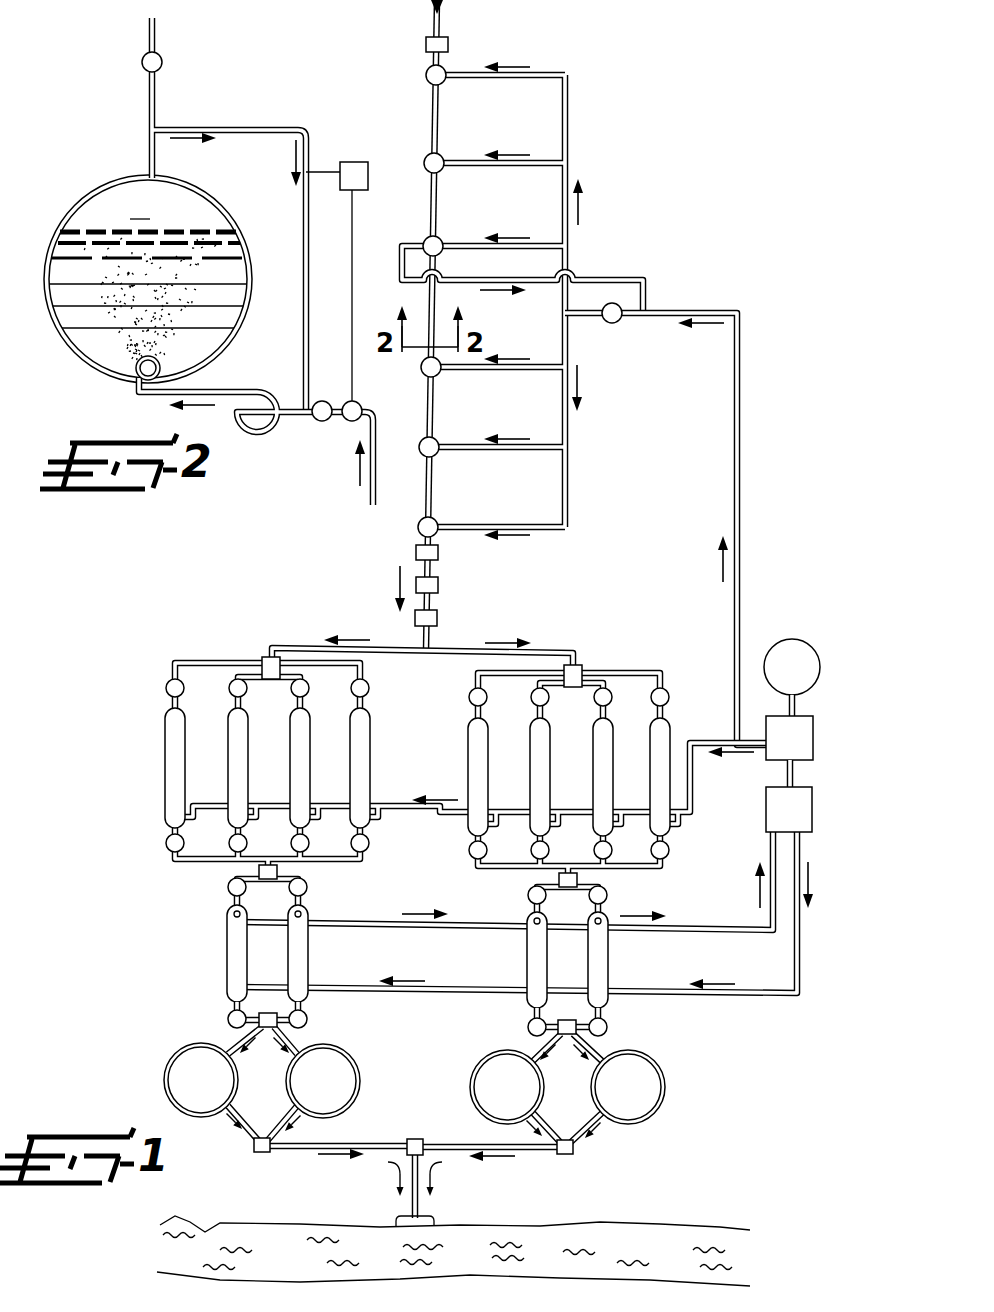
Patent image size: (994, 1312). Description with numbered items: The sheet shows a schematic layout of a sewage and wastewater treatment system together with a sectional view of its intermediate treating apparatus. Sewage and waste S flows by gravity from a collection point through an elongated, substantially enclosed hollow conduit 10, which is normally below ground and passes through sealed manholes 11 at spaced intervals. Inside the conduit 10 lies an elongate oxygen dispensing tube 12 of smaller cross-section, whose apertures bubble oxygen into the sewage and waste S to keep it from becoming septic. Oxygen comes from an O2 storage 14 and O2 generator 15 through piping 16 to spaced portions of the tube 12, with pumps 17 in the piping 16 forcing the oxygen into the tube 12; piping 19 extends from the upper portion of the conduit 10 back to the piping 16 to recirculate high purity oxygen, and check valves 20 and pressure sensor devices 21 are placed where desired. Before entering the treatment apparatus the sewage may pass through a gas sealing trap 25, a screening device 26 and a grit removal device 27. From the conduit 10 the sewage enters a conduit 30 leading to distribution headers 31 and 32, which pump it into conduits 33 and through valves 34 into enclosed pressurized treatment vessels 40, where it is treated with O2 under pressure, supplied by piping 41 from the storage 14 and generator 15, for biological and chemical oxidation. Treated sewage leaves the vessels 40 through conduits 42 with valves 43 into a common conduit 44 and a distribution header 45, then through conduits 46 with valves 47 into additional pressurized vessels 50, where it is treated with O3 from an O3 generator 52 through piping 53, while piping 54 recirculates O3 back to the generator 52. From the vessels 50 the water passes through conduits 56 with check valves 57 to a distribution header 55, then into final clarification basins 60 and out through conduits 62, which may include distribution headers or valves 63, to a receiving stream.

In FIG. 1, the sewage transporting conduit 10 is at (417, 120).
In FIG. 2, the sewage transporting conduit 10 is at (85, 190).
In FIG. 1, the manholes 11 is at (425, 76).
In FIG. 2, the oxygen dispensing tube 12 is at (134, 375).
In FIG. 1, the O2 storage 14 is at (804, 636).
In FIG. 1, the O2 generator 15 is at (778, 713).
In FIG. 1, the piping 16 is at (545, 166).
In FIG. 2, the piping 16 is at (318, 422).
In FIG. 2, the pumps 17 is at (252, 434).
In FIG. 2, the piping 19 is at (220, 126).
In FIG. 1, the check valves 20 is at (612, 323).
In FIG. 2, the check valves 20 is at (350, 422).
In FIG. 2, the pressure sensor devices 21 is at (354, 190).
In FIG. 1, the gas sealing trap 25 is at (426, 44).
In FIG. 1, the screening device 26 is at (438, 590).
In FIG. 1, the grit removal device 27 is at (438, 623).
In FIG. 1, the conduit 30 is at (423, 648).
In FIG. 1, the distribution header 31 is at (264, 657).
In FIG. 1, the distribution header 32 is at (577, 665).
In FIG. 1, the conduits 33 is at (188, 670).
In FIG. 1, the valve 34 is at (164, 691).
In FIG. 1, the enclosed pressurized treatment vessels 40 is at (236, 775).
In FIG. 1, the piping 41 is at (368, 808).
In FIG. 1, the conduits 42 is at (166, 847).
In FIG. 1, the valves 43 is at (182, 850).
In FIG. 1, the common conduit 44 is at (210, 868).
In FIG. 1, the distribution header 45 is at (278, 884).
In FIG. 1, the conduits 46 is at (227, 914).
In FIG. 1, the valves 47 is at (228, 892).
In FIG. 1, the enclosed pressurized treatment vessels 50 is at (295, 956).
In FIG. 1, the O3 generator 52 is at (763, 820).
In FIG. 1, the piping 53 is at (738, 990).
In FIG. 1, the piping 54 is at (695, 928).
In FIG. 1, the distribution header 55 is at (256, 1020).
In FIG. 1, the conduits 56 is at (233, 1012).
In FIG. 1, the check valves 57 is at (229, 1021).
In FIG. 1, the final clarification basins 60 is at (296, 1085).
In FIG. 1, the conduits 62 is at (290, 1118).
In FIG. 1, the distribution headers or valves 63 is at (272, 1158).
In FIG. 2, the sewage and waste S is at (70, 302).